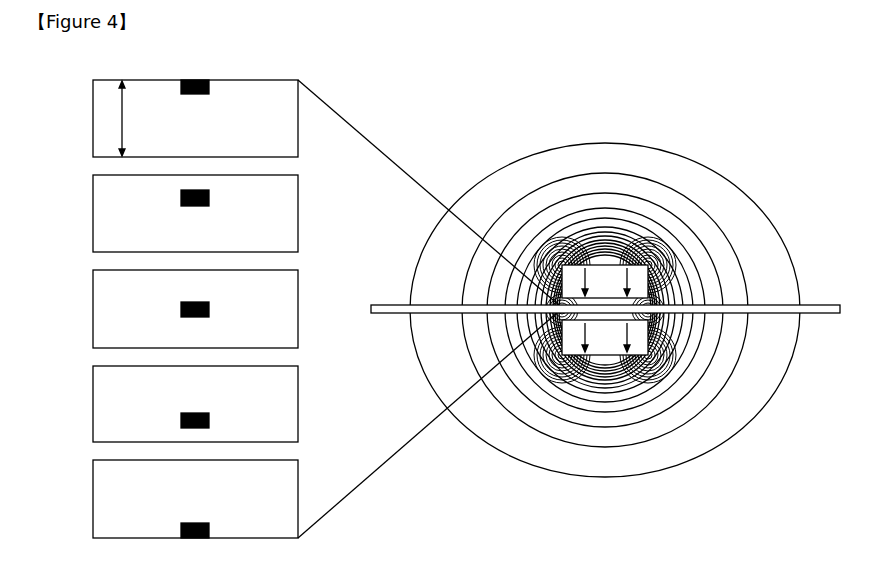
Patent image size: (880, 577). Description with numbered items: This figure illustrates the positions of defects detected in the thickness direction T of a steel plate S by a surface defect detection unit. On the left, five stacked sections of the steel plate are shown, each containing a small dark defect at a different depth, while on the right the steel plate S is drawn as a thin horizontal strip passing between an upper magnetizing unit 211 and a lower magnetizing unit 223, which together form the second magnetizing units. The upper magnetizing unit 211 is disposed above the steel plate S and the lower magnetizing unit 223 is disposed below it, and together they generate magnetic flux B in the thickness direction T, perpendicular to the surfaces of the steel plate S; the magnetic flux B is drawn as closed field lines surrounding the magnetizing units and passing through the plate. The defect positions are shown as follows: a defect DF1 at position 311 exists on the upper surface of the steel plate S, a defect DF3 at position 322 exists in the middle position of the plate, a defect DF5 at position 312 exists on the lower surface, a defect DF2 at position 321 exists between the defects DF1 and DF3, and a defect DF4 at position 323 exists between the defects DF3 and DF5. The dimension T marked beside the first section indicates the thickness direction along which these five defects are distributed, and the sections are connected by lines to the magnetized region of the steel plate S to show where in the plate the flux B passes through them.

The defect DF1 position 311 is at (93, 122).
The defect DF2 position 321 is at (93, 217).
The defect DF3 position 322 is at (93, 312).
The defect DF4 position 323 is at (93, 407).
The defect DF5 position 312 is at (93, 502).
The defect DF1 is at (195, 94).
The defect DF2 is at (195, 206).
The defect DF3 is at (209, 308).
The defect DF4 is at (209, 420).
The defect DF5 is at (209, 530).
The thickness direction T is at (130, 118).
The magnetic flux B is at (597, 265).
The steel plate S is at (395, 305).
The upper magnet 211 is at (614, 265).
The lower magnetizing unit 223 is at (617, 355).